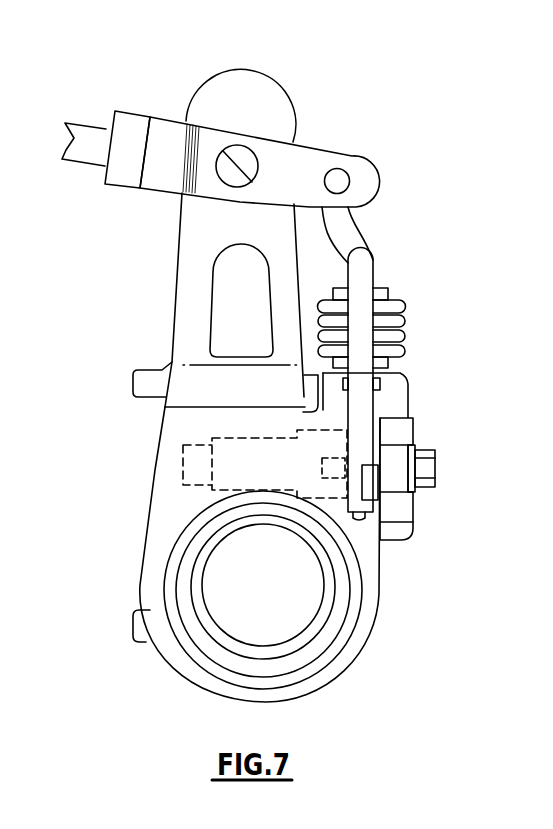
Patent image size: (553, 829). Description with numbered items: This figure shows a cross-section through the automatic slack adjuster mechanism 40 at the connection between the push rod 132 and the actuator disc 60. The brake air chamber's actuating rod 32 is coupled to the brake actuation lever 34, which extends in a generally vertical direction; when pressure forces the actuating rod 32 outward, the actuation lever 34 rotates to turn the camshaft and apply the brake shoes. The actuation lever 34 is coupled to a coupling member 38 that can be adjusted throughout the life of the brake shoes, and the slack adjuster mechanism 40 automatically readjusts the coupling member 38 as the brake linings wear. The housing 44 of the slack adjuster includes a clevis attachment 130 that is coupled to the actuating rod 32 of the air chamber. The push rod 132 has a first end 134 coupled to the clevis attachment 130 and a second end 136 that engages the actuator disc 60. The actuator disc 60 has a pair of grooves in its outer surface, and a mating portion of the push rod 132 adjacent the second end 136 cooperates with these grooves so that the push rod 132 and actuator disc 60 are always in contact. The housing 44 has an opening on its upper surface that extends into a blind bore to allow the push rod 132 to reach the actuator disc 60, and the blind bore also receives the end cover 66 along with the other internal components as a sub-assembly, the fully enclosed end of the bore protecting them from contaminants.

The actuating rod 32 is at (90, 153).
The clevis attachment 130 is at (280, 167).
The first end 134 is at (347, 222).
The brake actuation lever 34 is at (193, 277).
The automatic slack adjuster mechanism 40 is at (460, 313).
The push rod 132 is at (400, 350).
The actuator disc 60 is at (375, 477).
The end cover 66 is at (428, 470).
The second end 136 is at (367, 518).
The housing 44 is at (372, 605).
The coupling member 38 is at (212, 617).